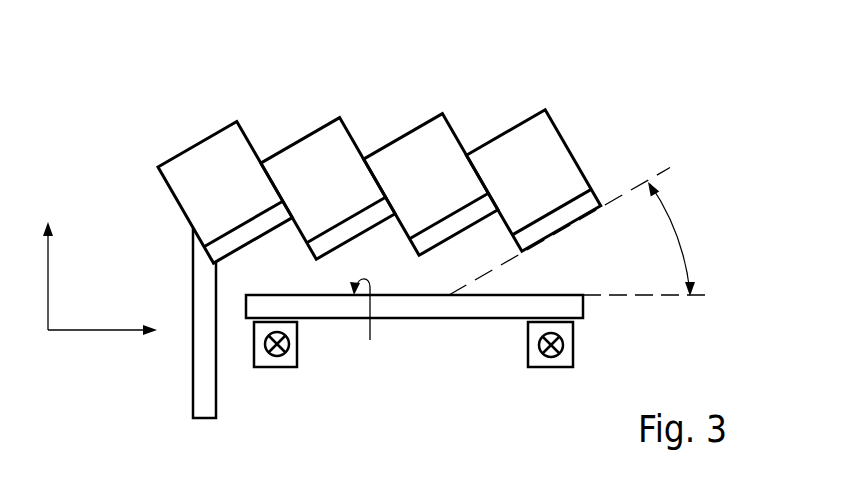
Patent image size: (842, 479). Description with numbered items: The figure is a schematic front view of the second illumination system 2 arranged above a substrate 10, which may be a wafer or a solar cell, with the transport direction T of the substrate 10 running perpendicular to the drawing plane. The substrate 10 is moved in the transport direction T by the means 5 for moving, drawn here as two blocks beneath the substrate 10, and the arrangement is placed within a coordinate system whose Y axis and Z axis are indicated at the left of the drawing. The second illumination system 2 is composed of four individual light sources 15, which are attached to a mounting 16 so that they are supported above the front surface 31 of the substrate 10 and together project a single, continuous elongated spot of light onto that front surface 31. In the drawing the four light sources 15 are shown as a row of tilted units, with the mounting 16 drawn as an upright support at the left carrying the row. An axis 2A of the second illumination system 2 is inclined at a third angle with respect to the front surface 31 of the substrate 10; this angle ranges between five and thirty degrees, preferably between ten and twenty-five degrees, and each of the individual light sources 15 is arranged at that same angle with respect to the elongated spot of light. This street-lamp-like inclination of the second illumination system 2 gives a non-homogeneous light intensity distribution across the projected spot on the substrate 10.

The second illumination system 2 is at (379, 159).
The axis of the second illumination system 2A is at (633, 190).
The light source 15 is at (243, 204).
The substrate 10 is at (567, 309).
The mounting 16 is at (202, 371).
The means for moving 5 is at (288, 358).
The transport direction T is at (268, 345).
The front surface of substrate 31 is at (369, 329).
The Z axis Z is at (36, 276).
The Y axis Y is at (102, 346).